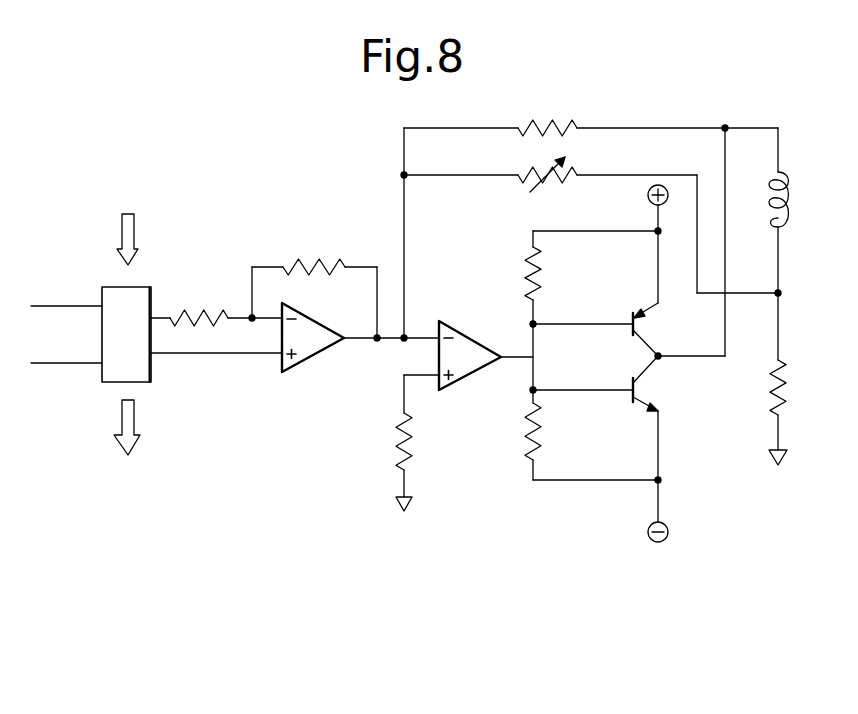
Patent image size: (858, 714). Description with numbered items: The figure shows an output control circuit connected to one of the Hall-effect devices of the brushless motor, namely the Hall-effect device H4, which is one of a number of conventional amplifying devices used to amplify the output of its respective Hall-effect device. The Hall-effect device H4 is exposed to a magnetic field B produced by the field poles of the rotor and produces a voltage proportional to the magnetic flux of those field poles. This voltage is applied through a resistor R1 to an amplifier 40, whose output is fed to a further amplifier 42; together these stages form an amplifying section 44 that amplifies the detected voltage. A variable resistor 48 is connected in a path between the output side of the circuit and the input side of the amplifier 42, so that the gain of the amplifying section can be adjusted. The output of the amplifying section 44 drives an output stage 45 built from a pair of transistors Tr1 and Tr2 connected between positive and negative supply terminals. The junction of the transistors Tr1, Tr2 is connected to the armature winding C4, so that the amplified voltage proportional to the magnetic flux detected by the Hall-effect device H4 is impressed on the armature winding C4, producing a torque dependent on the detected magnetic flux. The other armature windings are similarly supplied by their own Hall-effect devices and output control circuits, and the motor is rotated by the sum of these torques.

The magnetic field B is at (127, 320).
The Hall-effect device H4 is at (136, 287).
The resistor R1 is at (216, 308).
The operational amplifier 40 is at (312, 358).
The operational amplifier 42 is at (478, 373).
The amplifier circuit 44 is at (245, 551).
The push-pull output stage 45 is at (662, 551).
The variable resistor 48 is at (570, 167).
The transistor Tr1 is at (610, 295).
The transistor Tr2 is at (610, 418).
The armature winding C4 is at (788, 198).